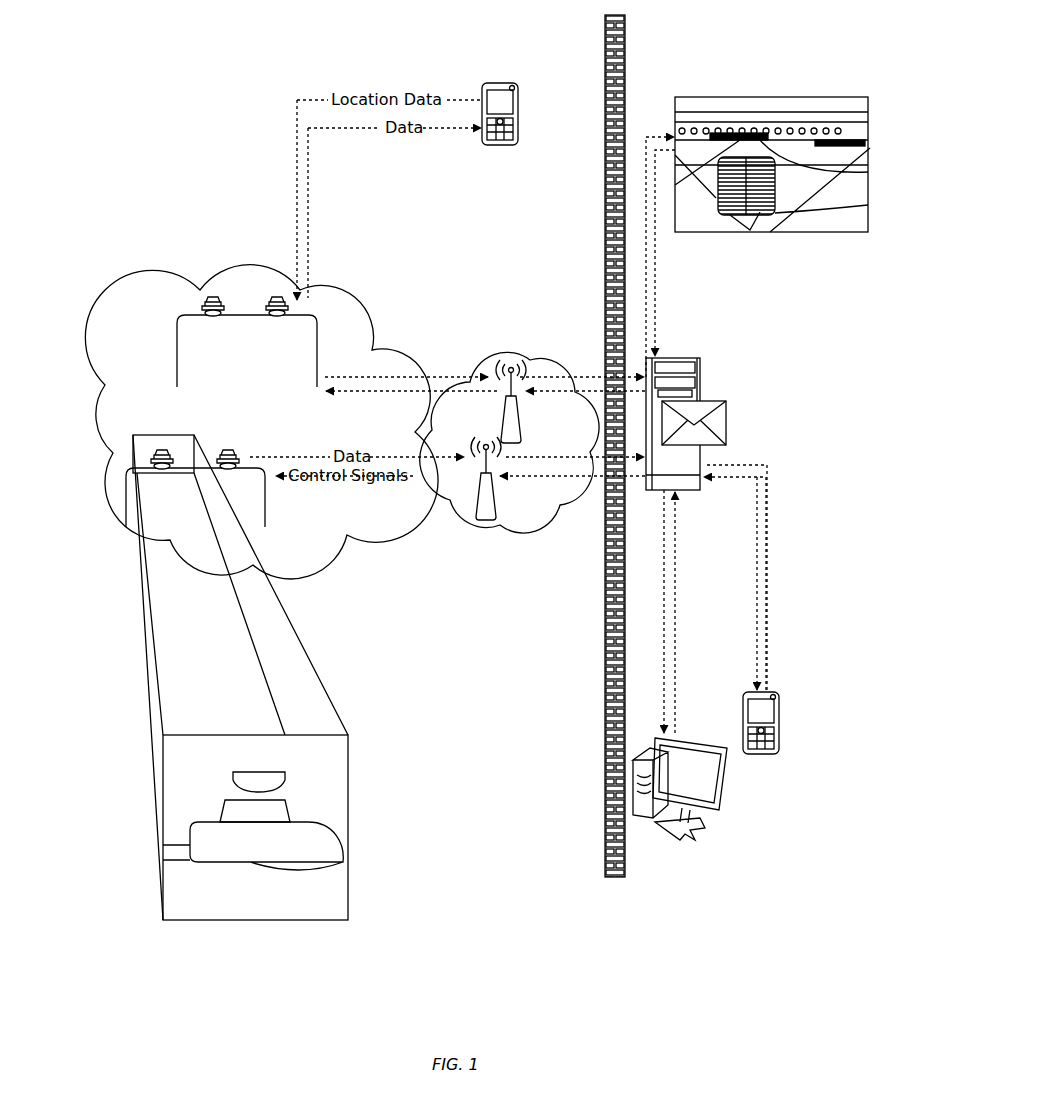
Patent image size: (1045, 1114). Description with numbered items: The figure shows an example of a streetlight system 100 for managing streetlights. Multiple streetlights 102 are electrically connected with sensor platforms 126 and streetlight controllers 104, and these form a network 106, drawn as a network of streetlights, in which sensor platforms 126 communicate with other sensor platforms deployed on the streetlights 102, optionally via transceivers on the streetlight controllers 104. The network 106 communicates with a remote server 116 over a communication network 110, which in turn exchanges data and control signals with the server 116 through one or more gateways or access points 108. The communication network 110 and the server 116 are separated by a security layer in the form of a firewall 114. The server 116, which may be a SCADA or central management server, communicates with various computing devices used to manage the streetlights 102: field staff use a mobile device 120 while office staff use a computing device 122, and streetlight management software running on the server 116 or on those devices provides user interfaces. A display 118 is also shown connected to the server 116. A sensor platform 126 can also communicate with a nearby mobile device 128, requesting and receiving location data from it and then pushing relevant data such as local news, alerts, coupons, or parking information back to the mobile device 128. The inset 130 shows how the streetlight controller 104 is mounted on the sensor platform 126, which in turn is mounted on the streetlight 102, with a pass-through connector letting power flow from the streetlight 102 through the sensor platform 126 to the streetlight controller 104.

The streetlight system 100 is at (178, 112).
The streetlight 102 is at (237, 856).
The streetlight controller 104 is at (278, 780).
The network 106 is at (270, 436).
The gateway or access point 108 is at (521, 410).
The communication network 110 is at (463, 440).
The firewall 114 is at (625, 43).
The server 116 is at (700, 385).
The map display 118 is at (770, 98).
The mobile device 120 is at (779, 715).
The computing device 122 is at (725, 790).
The sensor platform 126 is at (272, 311).
The mobile device 128 is at (518, 108).
The inset 130 is at (348, 825).